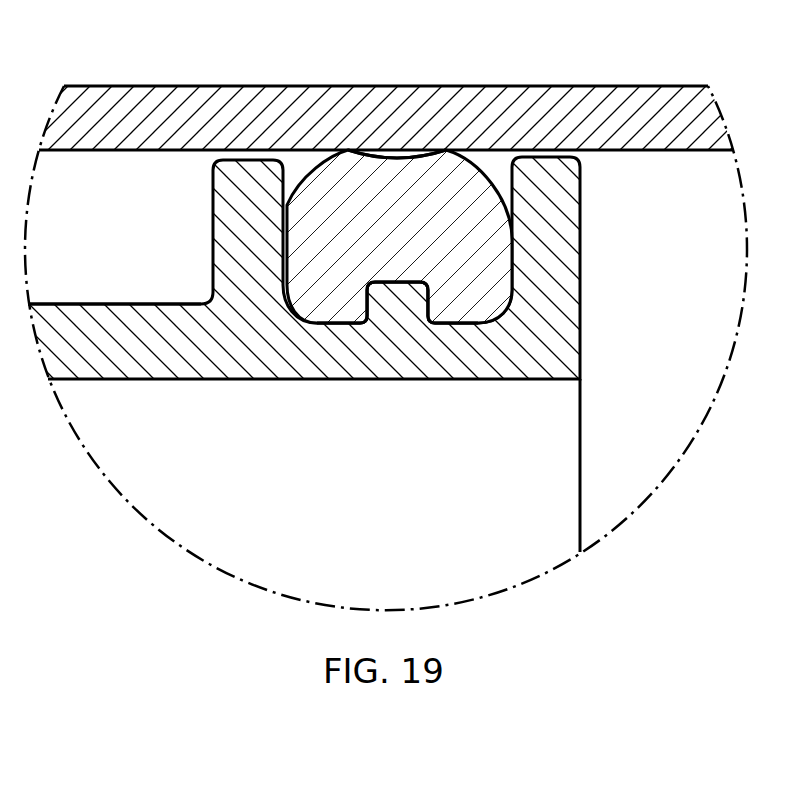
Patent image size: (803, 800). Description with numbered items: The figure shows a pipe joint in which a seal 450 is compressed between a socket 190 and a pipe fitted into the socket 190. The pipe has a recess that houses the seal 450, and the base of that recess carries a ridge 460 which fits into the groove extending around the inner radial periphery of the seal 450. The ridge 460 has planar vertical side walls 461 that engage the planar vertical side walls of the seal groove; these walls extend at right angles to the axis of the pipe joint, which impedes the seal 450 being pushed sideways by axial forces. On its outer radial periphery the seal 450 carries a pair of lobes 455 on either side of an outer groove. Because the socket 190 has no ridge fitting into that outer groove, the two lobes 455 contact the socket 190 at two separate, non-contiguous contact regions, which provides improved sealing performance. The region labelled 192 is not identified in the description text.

The socket 190 is at (678, 329).
The step surface of housing 192 is at (128, 303).
The seal 450 is at (412, 211).
The lobes 455 is at (440, 150).
The ridge 460 is at (405, 282).
The planar vertical side walls 461 is at (362, 306).